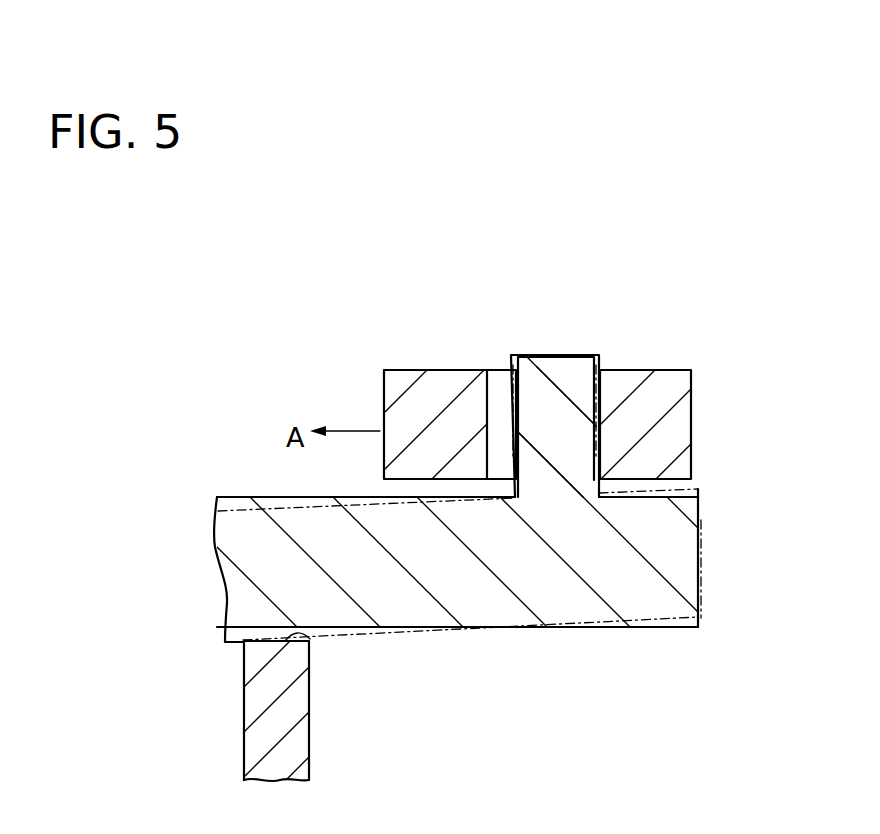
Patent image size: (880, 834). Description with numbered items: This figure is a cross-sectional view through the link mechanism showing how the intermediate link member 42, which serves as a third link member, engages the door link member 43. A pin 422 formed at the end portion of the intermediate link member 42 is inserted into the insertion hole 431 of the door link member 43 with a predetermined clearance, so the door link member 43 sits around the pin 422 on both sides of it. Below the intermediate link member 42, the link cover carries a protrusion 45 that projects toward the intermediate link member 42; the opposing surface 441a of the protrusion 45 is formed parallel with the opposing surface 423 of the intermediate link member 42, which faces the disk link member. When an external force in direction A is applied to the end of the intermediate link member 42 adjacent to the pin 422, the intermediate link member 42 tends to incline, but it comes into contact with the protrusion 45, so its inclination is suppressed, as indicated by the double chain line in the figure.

The intermediate link member 42 is at (701, 568).
The pin 422 is at (577, 356).
The opposing surface 423 is at (636, 630).
The door link member 43 is at (663, 370).
The insertion hole 431 is at (487, 390).
The opposing surface 441a is at (306, 636).
The protrusion 45 is at (311, 735).